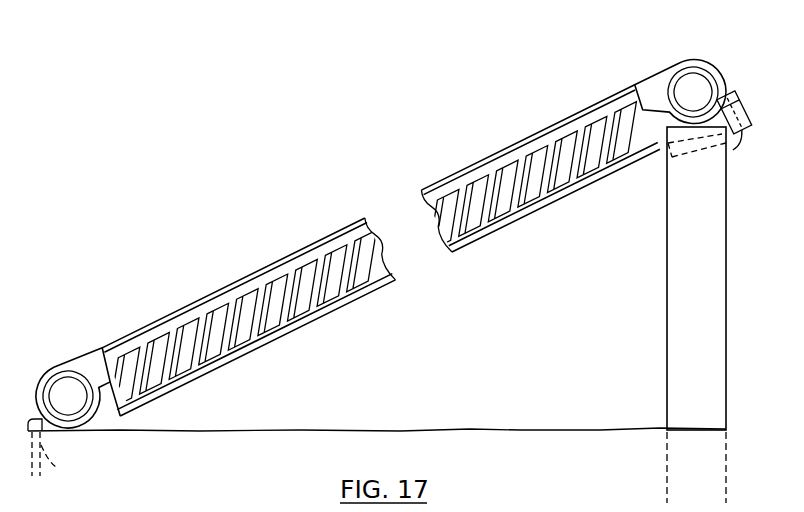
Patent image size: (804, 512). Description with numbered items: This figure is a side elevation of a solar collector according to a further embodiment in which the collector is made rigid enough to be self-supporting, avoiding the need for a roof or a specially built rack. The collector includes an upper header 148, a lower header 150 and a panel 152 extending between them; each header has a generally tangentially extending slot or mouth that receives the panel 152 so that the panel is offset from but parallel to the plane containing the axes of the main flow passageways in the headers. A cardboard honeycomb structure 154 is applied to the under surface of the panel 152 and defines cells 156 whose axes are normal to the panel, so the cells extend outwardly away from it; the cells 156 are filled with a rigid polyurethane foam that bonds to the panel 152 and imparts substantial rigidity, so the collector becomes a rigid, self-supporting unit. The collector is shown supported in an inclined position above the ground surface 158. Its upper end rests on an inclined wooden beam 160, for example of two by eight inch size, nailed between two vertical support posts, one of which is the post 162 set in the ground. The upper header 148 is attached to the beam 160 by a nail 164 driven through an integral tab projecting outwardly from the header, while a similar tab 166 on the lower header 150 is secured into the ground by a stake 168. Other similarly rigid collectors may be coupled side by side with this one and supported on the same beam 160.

The upper header 148 is at (654, 74).
The lower header 150 is at (88, 352).
The panel 152 is at (243, 279).
The cardboard honeycomb structure 154 is at (297, 334).
The cells 156 is at (350, 232).
The ground surface 158 is at (491, 430).
The inclined wooden beam 160 is at (730, 138).
The vertical support post 162 is at (671, 253).
The nail 164 is at (729, 96).
The tab 166 is at (45, 431).
The stake 168 is at (58, 468).